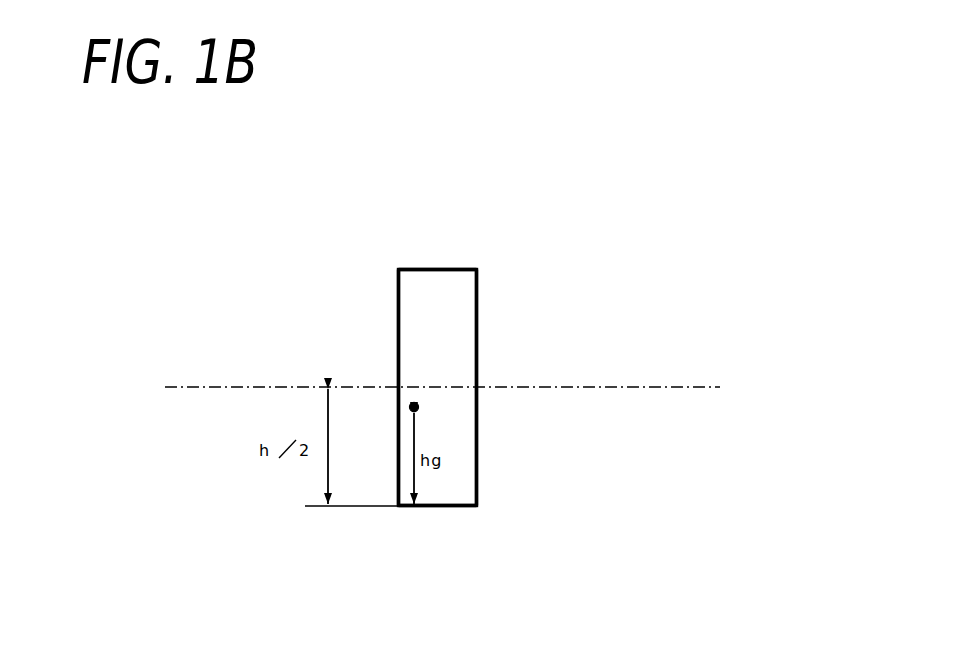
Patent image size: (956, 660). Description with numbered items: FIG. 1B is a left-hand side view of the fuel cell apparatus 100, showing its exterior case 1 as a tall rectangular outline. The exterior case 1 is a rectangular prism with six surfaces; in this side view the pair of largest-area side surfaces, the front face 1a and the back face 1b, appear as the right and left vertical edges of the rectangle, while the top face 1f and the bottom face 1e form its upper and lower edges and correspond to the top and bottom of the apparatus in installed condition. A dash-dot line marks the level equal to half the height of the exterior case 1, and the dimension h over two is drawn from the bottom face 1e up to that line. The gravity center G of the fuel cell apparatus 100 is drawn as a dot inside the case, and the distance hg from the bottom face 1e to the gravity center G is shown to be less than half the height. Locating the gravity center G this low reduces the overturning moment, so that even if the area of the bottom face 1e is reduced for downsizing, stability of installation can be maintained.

The fuel cell apparatus 100 is at (243, 213).
The exterior case 1 is at (462, 310).
The top face 1f is at (430, 268).
The back face 1b is at (397, 352).
The front face 1a is at (478, 422).
The bottom face 1e is at (440, 507).
The gravity center G is at (422, 407).